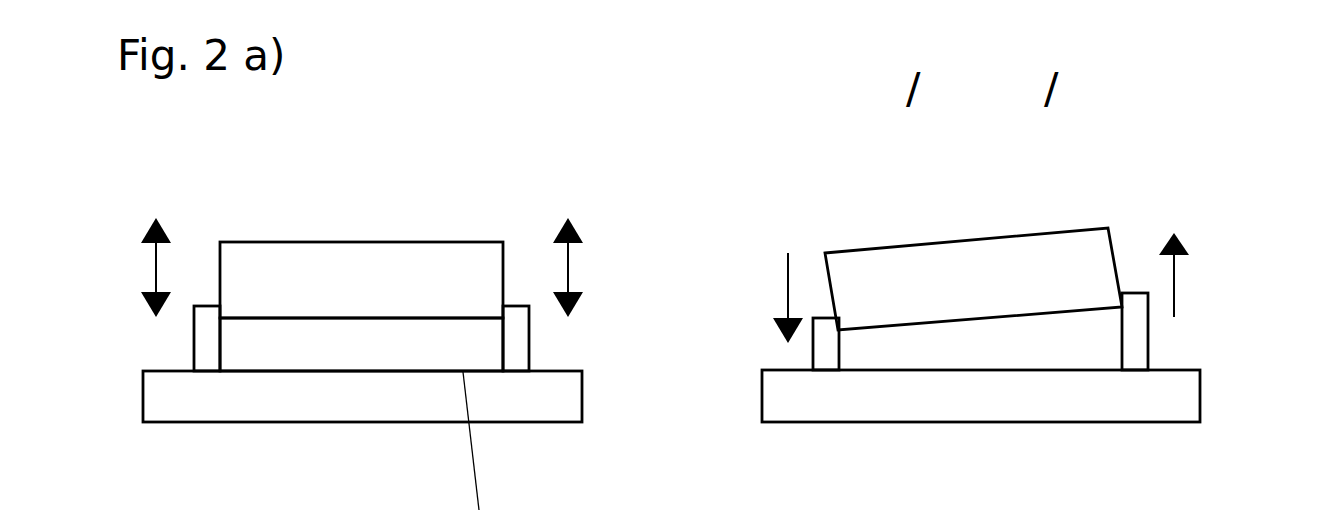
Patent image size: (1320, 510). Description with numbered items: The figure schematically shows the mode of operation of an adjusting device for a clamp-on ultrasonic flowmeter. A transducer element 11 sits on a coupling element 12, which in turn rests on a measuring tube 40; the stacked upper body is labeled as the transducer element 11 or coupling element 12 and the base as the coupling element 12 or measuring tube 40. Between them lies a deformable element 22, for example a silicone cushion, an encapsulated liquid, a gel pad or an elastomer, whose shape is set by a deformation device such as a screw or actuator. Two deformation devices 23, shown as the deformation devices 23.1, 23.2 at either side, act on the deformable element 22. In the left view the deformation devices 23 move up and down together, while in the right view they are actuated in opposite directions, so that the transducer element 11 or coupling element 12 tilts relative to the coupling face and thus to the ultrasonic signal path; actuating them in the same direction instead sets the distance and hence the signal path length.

The transducer element 11 is at (361, 280).
The coupling element 12 is at (362, 332).
The measuring tube 40 is at (362, 396).
The deformable element 22 is at (452, 343).
The deformation devices 23 is at (517, 344).
The deformation device 23.1 is at (826, 345).
The deformation device 23.2 is at (1135, 307).